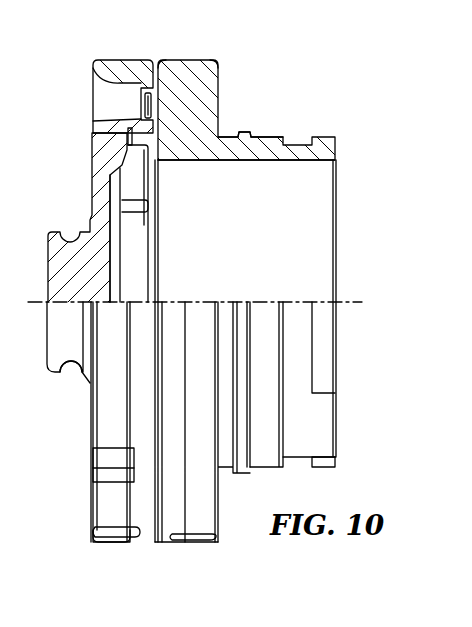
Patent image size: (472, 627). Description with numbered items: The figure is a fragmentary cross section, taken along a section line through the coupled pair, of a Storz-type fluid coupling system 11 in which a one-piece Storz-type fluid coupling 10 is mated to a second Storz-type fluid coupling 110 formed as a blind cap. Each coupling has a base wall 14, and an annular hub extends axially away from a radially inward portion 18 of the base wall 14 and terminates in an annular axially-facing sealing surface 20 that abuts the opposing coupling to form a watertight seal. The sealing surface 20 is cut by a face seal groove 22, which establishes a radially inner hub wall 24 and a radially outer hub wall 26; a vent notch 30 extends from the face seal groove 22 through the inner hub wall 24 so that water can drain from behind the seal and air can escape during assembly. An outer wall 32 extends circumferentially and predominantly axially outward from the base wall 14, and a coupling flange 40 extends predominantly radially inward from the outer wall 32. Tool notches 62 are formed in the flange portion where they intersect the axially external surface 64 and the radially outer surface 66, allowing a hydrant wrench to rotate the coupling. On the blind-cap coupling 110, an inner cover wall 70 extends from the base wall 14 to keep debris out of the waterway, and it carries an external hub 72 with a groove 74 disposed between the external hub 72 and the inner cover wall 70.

The one-piece Storz-type fluid coupling 10 is at (190, 60).
The Storz-type fluid coupling system 11 is at (353, 121).
The base wall 14 is at (130, 162).
The radially inward portion 18 is at (195, 162).
The annular axially-facing sealing surface 20 is at (152, 134).
The face seal groove 22 is at (128, 135).
The radially inner hub wall 24 is at (138, 152).
The radially outer hub wall 26 is at (140, 125).
The vent notch 30 is at (128, 205).
The outer wall 32 is at (127, 60).
The coupling flange 40 is at (246, 39).
The tool notch 62 is at (107, 460).
The axially external surface 64 is at (93, 516).
The radially outer surface 66 is at (112, 544).
The inner cover wall 70 is at (110, 256).
The external hub 72 is at (47, 322).
The groove 74 is at (72, 360).
The second Storz-type fluid coupling 110 is at (112, 60).